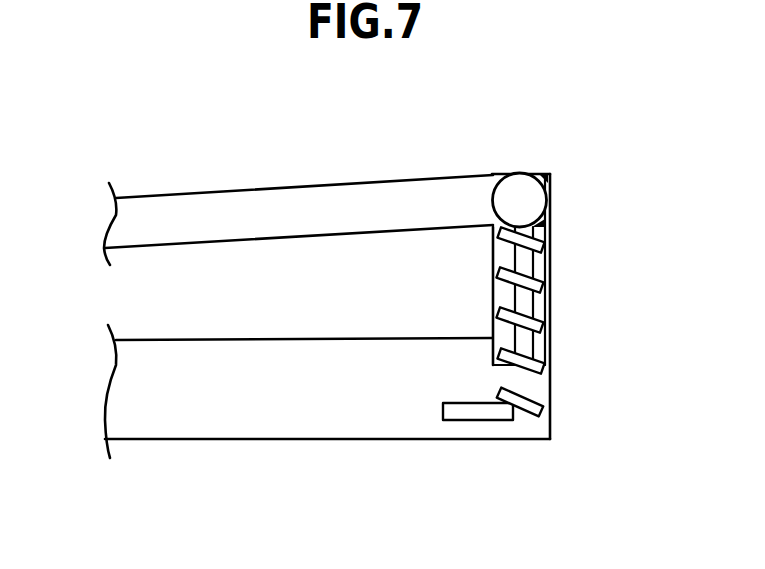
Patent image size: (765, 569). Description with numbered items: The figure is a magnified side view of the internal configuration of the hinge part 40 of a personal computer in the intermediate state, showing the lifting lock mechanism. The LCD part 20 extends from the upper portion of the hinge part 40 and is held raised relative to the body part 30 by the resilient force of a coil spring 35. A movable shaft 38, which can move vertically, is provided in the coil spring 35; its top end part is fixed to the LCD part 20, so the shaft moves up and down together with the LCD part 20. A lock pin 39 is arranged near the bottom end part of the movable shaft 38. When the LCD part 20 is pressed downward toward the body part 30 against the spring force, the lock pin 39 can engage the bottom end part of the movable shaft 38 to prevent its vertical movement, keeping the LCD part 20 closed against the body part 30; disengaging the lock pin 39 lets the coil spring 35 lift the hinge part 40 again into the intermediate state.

The LCD part 20 is at (343, 185).
The body part 30 is at (355, 440).
The coil spring 35 is at (548, 417).
The movable shaft 38 is at (546, 275).
The lock pin 39 is at (473, 421).
The hinge part 40 is at (590, 179).